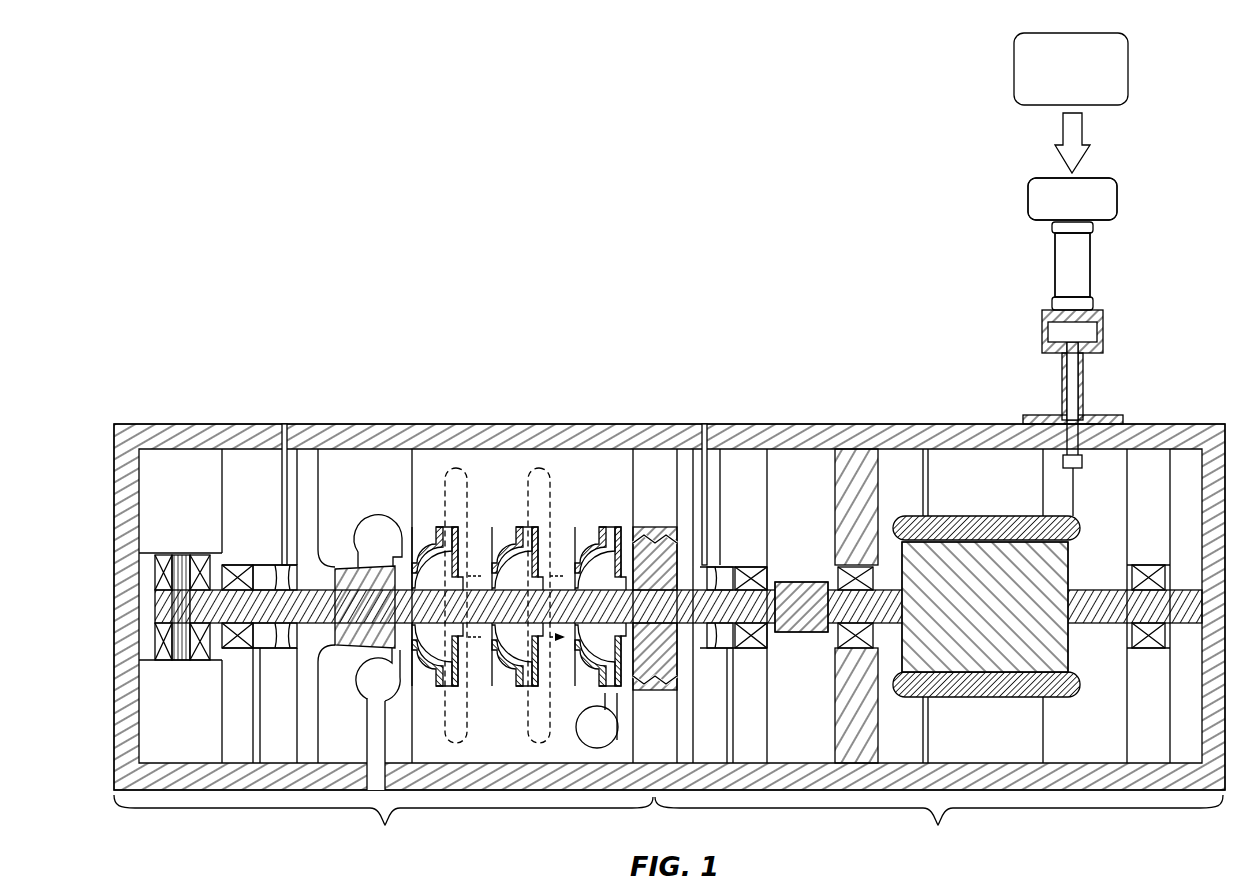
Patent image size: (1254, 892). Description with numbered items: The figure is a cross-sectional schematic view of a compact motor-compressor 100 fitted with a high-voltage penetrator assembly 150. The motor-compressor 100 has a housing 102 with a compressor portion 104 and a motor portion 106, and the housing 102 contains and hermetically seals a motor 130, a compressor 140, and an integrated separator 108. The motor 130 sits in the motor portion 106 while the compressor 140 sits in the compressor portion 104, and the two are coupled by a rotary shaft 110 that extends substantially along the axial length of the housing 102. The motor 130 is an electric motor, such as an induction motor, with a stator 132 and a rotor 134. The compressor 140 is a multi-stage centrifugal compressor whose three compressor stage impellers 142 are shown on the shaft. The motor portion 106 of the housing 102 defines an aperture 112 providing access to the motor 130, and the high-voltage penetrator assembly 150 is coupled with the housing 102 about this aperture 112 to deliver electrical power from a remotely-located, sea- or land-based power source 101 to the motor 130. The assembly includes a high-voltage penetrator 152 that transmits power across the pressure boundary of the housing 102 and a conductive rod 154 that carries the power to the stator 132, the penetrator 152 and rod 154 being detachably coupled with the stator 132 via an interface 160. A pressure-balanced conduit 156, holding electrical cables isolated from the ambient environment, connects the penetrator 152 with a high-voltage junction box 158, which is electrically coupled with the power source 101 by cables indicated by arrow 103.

The compact motor-compressor 100 is at (288, 308).
The power source 101 is at (1071, 69).
The housing 102 is at (492, 424).
The arrow 103 is at (1085, 148).
The compressor portion 104 is at (383, 826).
The motor portion 106 is at (939, 826).
The integrated separator 108 is at (358, 566).
The rotary shaft 110 is at (853, 610).
The aperture 112 is at (1062, 433).
The motor 130 is at (987, 699).
The stator 132 is at (1085, 693).
The rotor 134 is at (1005, 619).
The compressor 140 is at (505, 466).
The compressor stage impellers 142 is at (575, 687).
The high-voltage penetrator assembly 150 is at (1005, 300).
The high-voltage penetrator 152 is at (1106, 330).
The conductive rod 154 is at (1080, 437).
The conduit 156 is at (1090, 262).
The high-voltage junction box 158 is at (1115, 196).
The interface 160 is at (1058, 466).